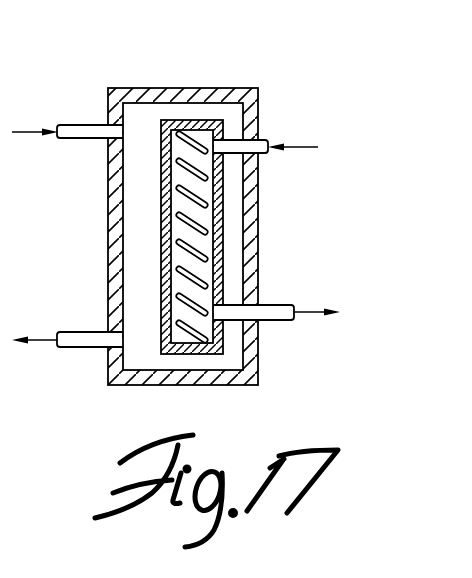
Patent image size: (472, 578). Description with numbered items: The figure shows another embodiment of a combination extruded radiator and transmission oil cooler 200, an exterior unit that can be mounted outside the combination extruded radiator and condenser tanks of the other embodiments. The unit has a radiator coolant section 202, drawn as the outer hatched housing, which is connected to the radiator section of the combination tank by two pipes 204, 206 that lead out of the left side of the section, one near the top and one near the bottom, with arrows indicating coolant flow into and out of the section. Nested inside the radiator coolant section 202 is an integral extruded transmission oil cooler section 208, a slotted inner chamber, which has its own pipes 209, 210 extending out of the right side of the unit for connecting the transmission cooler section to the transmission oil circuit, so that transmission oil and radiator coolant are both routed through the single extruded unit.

The combination extruded radiator and transmission oil cooler 200 is at (247, 198).
The radiator coolant section 202 is at (150, 93).
The pipe 204 is at (88, 134).
The pipe 206 is at (80, 340).
The transmission oil cooler section 208 is at (200, 120).
The pipe 209 is at (258, 150).
The pipe 210 is at (275, 308).